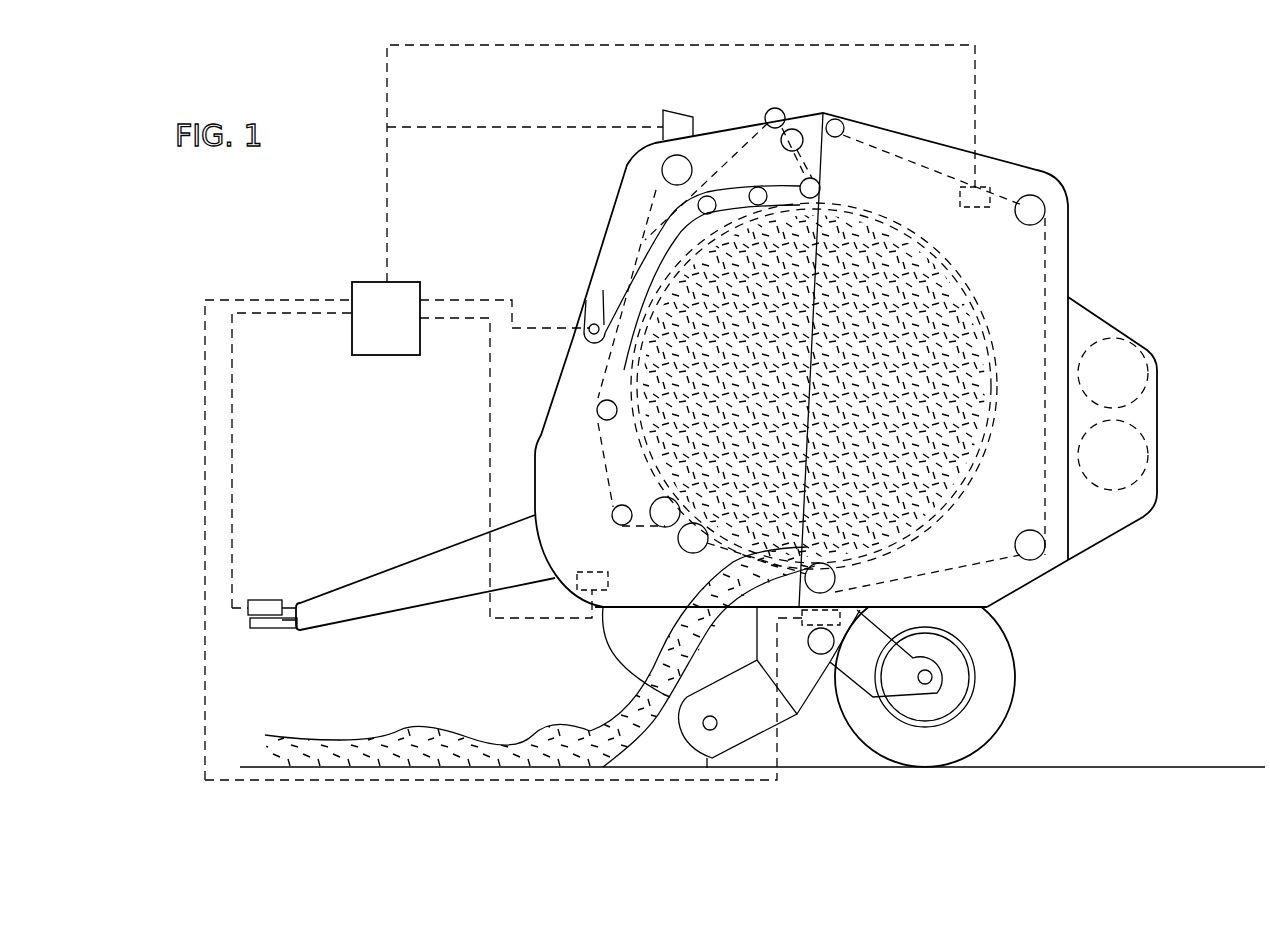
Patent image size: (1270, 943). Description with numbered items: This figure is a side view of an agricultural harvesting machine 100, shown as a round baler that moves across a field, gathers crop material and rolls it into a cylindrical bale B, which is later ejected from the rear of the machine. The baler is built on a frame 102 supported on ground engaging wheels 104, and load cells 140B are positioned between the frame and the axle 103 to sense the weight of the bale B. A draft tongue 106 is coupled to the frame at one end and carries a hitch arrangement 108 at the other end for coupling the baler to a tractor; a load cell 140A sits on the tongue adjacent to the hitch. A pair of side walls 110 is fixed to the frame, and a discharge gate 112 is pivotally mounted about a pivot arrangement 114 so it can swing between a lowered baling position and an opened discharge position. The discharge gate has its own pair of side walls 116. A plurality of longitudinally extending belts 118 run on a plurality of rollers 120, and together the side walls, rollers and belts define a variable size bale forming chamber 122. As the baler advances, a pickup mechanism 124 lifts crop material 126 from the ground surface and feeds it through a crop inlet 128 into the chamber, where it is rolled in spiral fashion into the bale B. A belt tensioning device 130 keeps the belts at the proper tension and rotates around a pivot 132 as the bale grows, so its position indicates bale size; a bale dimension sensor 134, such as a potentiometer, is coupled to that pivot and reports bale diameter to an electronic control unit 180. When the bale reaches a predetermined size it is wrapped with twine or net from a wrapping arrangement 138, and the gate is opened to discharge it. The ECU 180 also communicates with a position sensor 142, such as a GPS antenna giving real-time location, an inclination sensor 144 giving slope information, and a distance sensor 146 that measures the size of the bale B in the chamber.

The agricultural harvesting machine 100 is at (1160, 113).
The frame 102 is at (900, 678).
The axle 103 is at (810, 655).
The wheels 104 is at (1007, 693).
The draft tongue 106 is at (413, 562).
The hitch arrangement 108 is at (262, 632).
The side walls 110 is at (727, 145).
The discharge gate 112 is at (1068, 241).
The pivot arrangement 114 is at (847, 122).
The side walls 116 is at (887, 187).
The belts 118 is at (1045, 265).
The rollers 120 is at (1035, 208).
The bale forming chamber 122 is at (946, 537).
The pickup mechanism 124 is at (715, 740).
The crop material 126 is at (430, 735).
The crop inlet 128 is at (702, 586).
The belt tensioning device 130 is at (630, 243).
The pivot 132 is at (586, 305).
The bale dimension sensor 134 is at (592, 328).
The wrapping arrangement 138 is at (1157, 368).
The load cell 140A is at (262, 602).
The load cell 140B is at (838, 625).
The position sensor 142 is at (672, 120).
The inclination sensor 144 is at (577, 578).
The distance sensor 146 is at (990, 187).
The electronic control unit 180 is at (398, 288).
The bale B is at (975, 455).